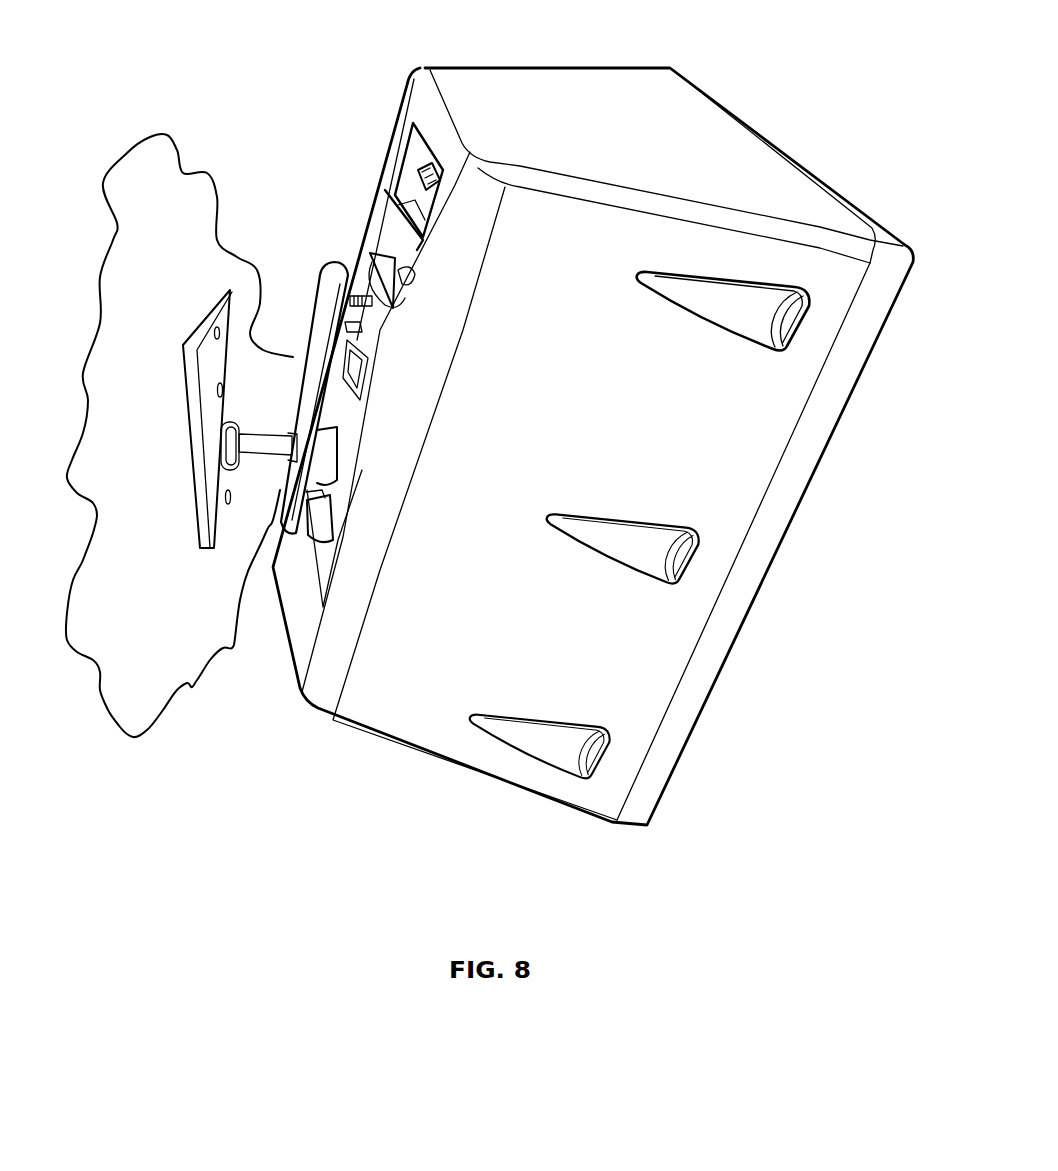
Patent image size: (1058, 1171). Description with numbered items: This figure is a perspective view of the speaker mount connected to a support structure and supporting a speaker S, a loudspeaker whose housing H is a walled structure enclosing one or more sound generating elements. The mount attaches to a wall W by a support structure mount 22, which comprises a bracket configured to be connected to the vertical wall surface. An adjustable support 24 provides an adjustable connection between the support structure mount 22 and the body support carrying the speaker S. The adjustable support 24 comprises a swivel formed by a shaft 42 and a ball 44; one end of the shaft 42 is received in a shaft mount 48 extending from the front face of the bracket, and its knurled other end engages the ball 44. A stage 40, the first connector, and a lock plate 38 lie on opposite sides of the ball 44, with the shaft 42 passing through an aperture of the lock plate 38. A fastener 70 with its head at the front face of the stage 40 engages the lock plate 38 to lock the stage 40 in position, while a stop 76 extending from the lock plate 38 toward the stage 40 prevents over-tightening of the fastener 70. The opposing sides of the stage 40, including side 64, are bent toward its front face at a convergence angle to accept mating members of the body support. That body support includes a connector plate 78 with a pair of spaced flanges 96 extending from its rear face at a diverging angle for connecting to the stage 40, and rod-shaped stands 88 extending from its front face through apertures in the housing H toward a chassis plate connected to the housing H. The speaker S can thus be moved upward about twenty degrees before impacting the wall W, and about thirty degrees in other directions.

The housing H is at (563, 88).
The speaker S is at (775, 102).
The wall W is at (167, 134).
The support structure mount 22 is at (217, 399).
The adjustable support 24 is at (230, 325).
The lock plate 38 is at (322, 268).
The stage 40 is at (392, 233).
The shaft 42 is at (280, 462).
The ball 44 is at (340, 443).
The shaft mount 48 is at (234, 422).
The opposing side of the stage 64 is at (362, 326).
The fastener 70 is at (385, 306).
The stop 76 is at (397, 337).
The connector plate 78 is at (372, 240).
The stands 88 is at (323, 497).
The flanges 96 is at (414, 270).